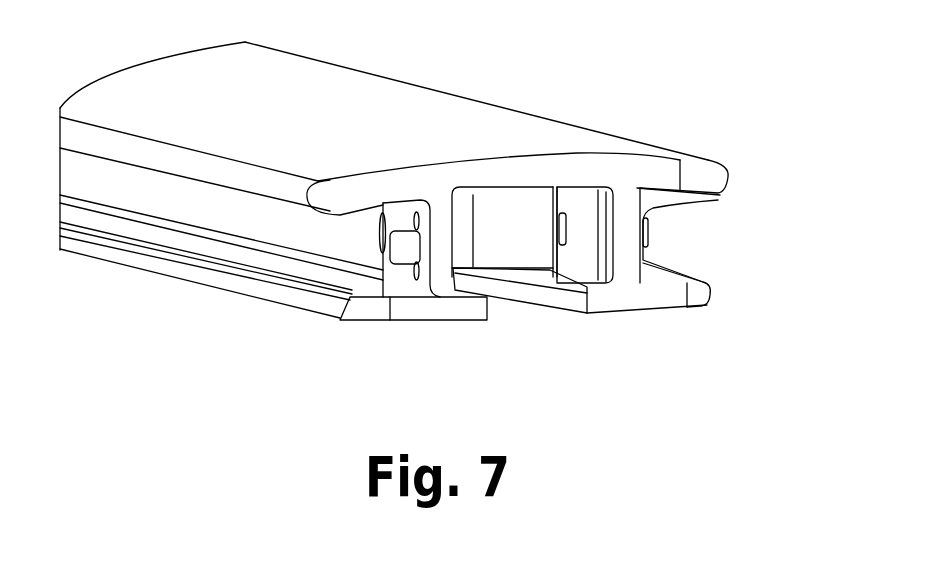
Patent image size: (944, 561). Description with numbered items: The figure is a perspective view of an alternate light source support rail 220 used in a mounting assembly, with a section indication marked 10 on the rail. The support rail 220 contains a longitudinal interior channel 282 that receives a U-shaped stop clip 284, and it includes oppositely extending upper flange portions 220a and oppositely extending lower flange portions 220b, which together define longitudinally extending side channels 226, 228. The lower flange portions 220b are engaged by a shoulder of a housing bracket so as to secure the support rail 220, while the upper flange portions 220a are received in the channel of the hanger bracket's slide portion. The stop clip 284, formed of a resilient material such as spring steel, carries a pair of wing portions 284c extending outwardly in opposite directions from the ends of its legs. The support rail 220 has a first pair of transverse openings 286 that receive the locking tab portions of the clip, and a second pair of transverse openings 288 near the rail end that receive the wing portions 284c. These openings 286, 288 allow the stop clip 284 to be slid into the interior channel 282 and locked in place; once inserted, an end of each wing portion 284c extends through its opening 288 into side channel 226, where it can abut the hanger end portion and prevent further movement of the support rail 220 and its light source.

The light source support rail 220 is at (408, 78).
The upper flange portions 220a is at (345, 195).
The lower flange portions 220b is at (378, 310).
The side channel 226 is at (160, 202).
The side channel 228 is at (653, 217).
The longitudinal interior channel 282 is at (503, 213).
The U-shaped stop clip 284 is at (583, 203).
The wing portions 284c is at (700, 200).
The first pair of transverse openings 286 is at (560, 222).
The second pair of transverse openings 288 is at (430, 282).
The section line 10- 10 is at (393, 252).